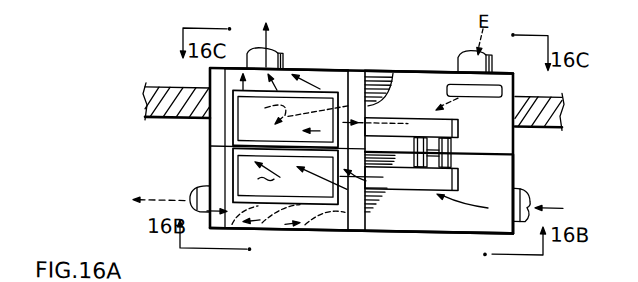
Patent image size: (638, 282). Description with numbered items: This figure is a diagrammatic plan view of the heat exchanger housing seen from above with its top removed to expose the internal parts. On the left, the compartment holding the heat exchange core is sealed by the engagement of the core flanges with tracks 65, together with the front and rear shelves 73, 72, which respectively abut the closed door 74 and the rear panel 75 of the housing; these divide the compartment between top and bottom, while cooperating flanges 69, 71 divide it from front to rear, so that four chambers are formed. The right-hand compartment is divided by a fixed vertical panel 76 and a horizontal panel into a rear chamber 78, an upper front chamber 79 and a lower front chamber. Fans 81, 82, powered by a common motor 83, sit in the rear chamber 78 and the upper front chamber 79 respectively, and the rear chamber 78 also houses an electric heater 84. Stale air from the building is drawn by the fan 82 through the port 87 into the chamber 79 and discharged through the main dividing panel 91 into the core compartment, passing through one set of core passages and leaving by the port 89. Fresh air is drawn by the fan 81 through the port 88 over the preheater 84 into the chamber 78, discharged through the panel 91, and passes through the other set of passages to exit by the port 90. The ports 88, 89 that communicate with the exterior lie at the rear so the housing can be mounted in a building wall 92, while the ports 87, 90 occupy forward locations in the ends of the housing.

The tracks 65 is at (216, 78).
The cooperating flange 69 is at (230, 145).
The cooperating flange 71 is at (212, 138).
The rear shelf 72 is at (322, 78).
The front shelf 73 is at (343, 208).
The door 74 is at (273, 228).
The rear panel 75 is at (300, 66).
The fixed vertical panel 76 is at (514, 142).
The rear chamber 78 is at (412, 78).
The upper front chamber 79 is at (503, 166).
The fan 81 is at (418, 119).
The fan 82 is at (410, 176).
The common motor 83 is at (440, 142).
The electric heater 84 is at (500, 84).
The port 87 is at (530, 184).
The port 88 is at (460, 59).
The port 89 is at (255, 45).
The port 90 is at (197, 186).
The main dividing panel 91 is at (380, 94).
The wall 92 is at (178, 94).